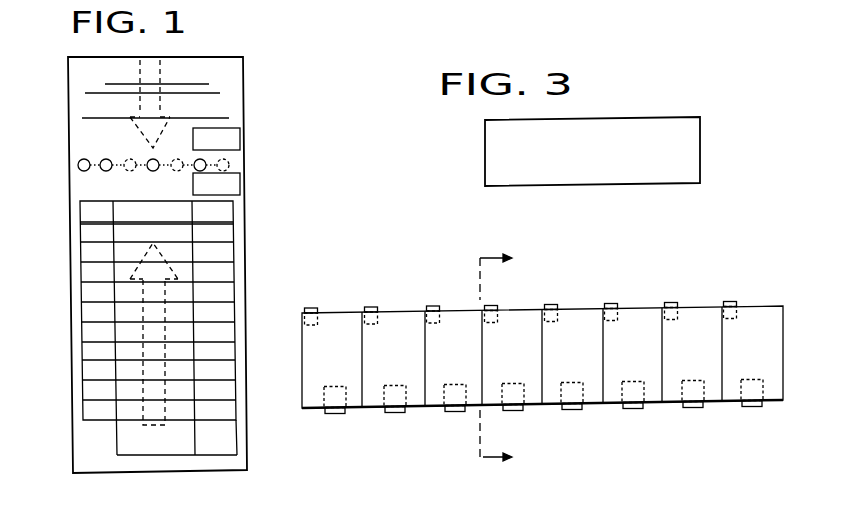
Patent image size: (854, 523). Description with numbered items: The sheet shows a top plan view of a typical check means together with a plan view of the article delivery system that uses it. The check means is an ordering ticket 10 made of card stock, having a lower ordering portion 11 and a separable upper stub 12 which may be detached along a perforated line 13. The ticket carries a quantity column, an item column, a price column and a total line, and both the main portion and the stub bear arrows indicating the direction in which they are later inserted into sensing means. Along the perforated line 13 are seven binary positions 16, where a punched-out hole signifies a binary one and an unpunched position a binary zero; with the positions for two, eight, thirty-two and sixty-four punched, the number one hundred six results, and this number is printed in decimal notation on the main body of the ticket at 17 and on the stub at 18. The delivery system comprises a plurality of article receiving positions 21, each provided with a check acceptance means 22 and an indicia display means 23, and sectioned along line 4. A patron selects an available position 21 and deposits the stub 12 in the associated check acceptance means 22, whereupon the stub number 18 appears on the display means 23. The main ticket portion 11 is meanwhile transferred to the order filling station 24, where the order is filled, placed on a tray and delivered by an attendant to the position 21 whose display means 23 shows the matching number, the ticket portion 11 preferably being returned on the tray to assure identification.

In FIG. 1, the ordering ticket 10 is at (252, 74).
In FIG. 1, the lower ordering portion 11 is at (68, 320).
In FIG. 1, the separable upper stub 12 is at (243, 100).
In FIG. 1, the perforated line 13 is at (78, 165).
In FIG. 1, the binary positions 16 is at (229, 160).
In FIG. 1, the decimal number on main body of ticket 17 is at (240, 188).
In FIG. 1, the decimal number on stub 18 is at (240, 140).
In FIG. 3, the article receiving positions 21 is at (388, 312).
In FIG. 3, the check acceptance means 22 is at (453, 414).
In FIG. 3, the indicia display means 23 is at (551, 306).
In FIG. 3, the order filling station 24 is at (700, 141).
In FIG. 3, the section line 4- 4 is at (503, 362).